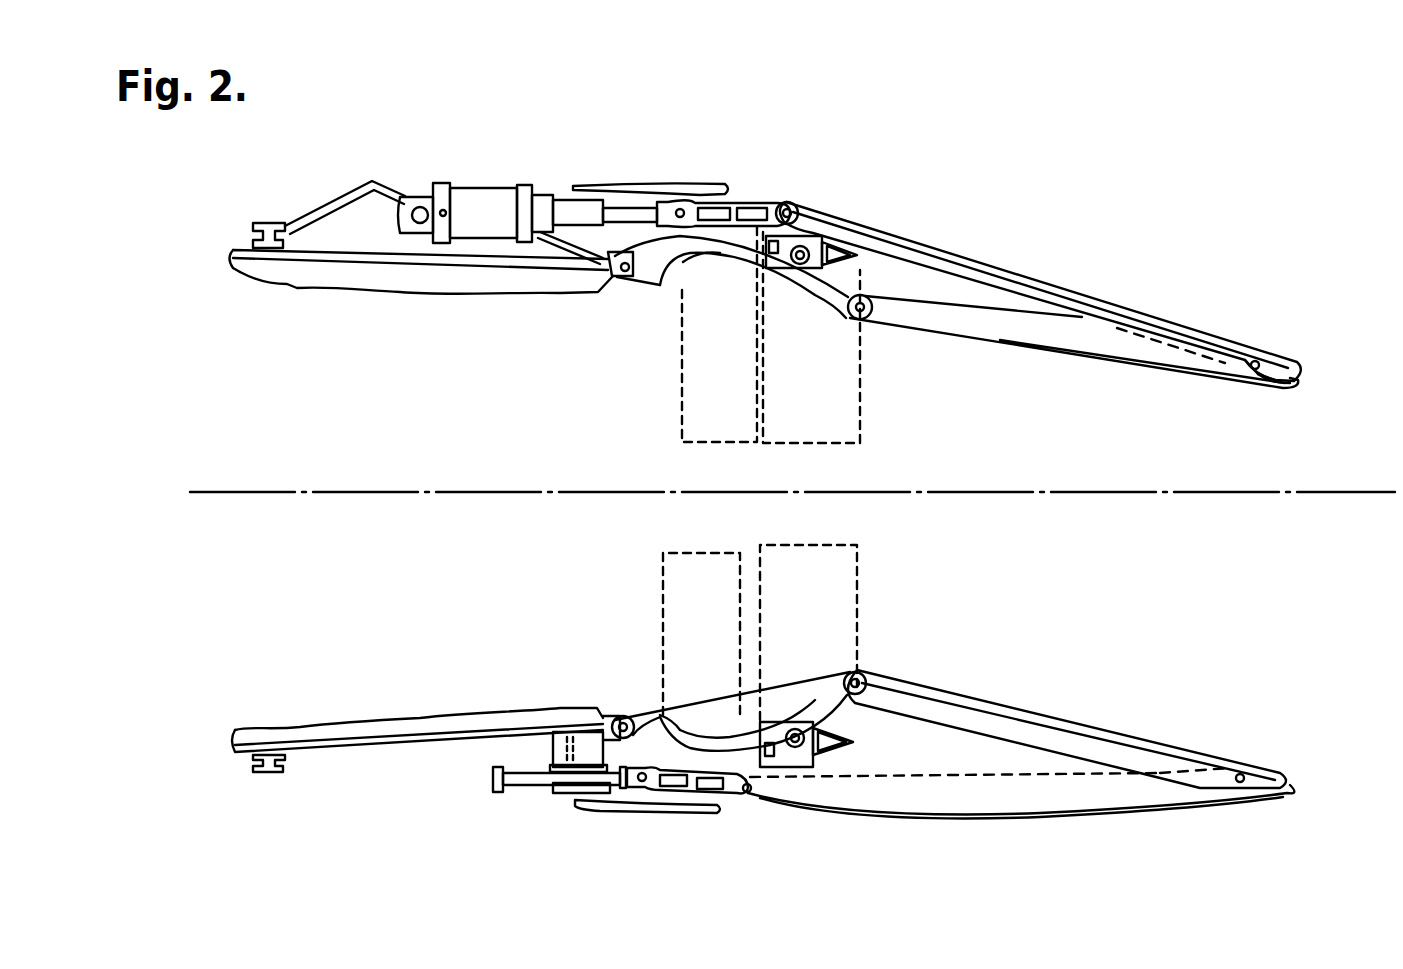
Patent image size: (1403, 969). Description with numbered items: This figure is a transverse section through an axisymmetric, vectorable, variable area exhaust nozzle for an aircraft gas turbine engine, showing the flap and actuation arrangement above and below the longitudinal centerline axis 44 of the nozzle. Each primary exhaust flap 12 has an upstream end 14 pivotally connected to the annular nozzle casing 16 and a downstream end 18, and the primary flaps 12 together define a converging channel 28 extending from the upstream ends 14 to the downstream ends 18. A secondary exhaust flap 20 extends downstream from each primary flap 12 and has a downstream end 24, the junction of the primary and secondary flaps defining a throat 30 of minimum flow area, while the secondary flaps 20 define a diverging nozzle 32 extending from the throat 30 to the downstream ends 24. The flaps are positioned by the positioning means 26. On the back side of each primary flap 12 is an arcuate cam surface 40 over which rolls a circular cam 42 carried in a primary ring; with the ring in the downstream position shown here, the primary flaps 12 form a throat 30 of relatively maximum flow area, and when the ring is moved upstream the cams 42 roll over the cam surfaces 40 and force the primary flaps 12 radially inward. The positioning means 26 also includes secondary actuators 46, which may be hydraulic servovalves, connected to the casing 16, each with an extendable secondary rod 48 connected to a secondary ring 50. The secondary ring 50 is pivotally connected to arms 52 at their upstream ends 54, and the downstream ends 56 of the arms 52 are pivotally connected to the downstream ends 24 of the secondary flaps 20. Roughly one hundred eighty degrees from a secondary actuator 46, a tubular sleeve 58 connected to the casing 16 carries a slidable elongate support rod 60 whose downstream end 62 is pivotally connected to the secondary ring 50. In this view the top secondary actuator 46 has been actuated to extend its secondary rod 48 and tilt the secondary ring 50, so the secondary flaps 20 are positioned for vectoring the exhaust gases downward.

The primary exhaust flap 12 is at (663, 282).
The upstream end 14 is at (640, 274).
The annular nozzle casing 16 is at (285, 284).
The downstream end 18 is at (770, 292).
The secondary exhaust flap 20 is at (1013, 343).
The downstream end 24 is at (1230, 364).
The positioning means 26 is at (808, 198).
The converging channel 28 is at (720, 531).
The throat 30 is at (832, 662).
The diverging nozzle 32 is at (1215, 574).
The arcuate cam surface 40 is at (718, 255).
The circular cam 42 is at (830, 216).
The longitudinal centerline axis 44 is at (394, 492).
The secondary actuator 46 is at (500, 185).
The secondary rod 48 is at (645, 184).
The secondary ring 50 is at (745, 203).
The arm 52 is at (1003, 250).
The upstream end 54 is at (782, 202).
The downstream end 56 is at (1198, 337).
The tubular sleeve 58 is at (550, 750).
The support rod 60 is at (514, 788).
The downstream end 62 is at (690, 798).